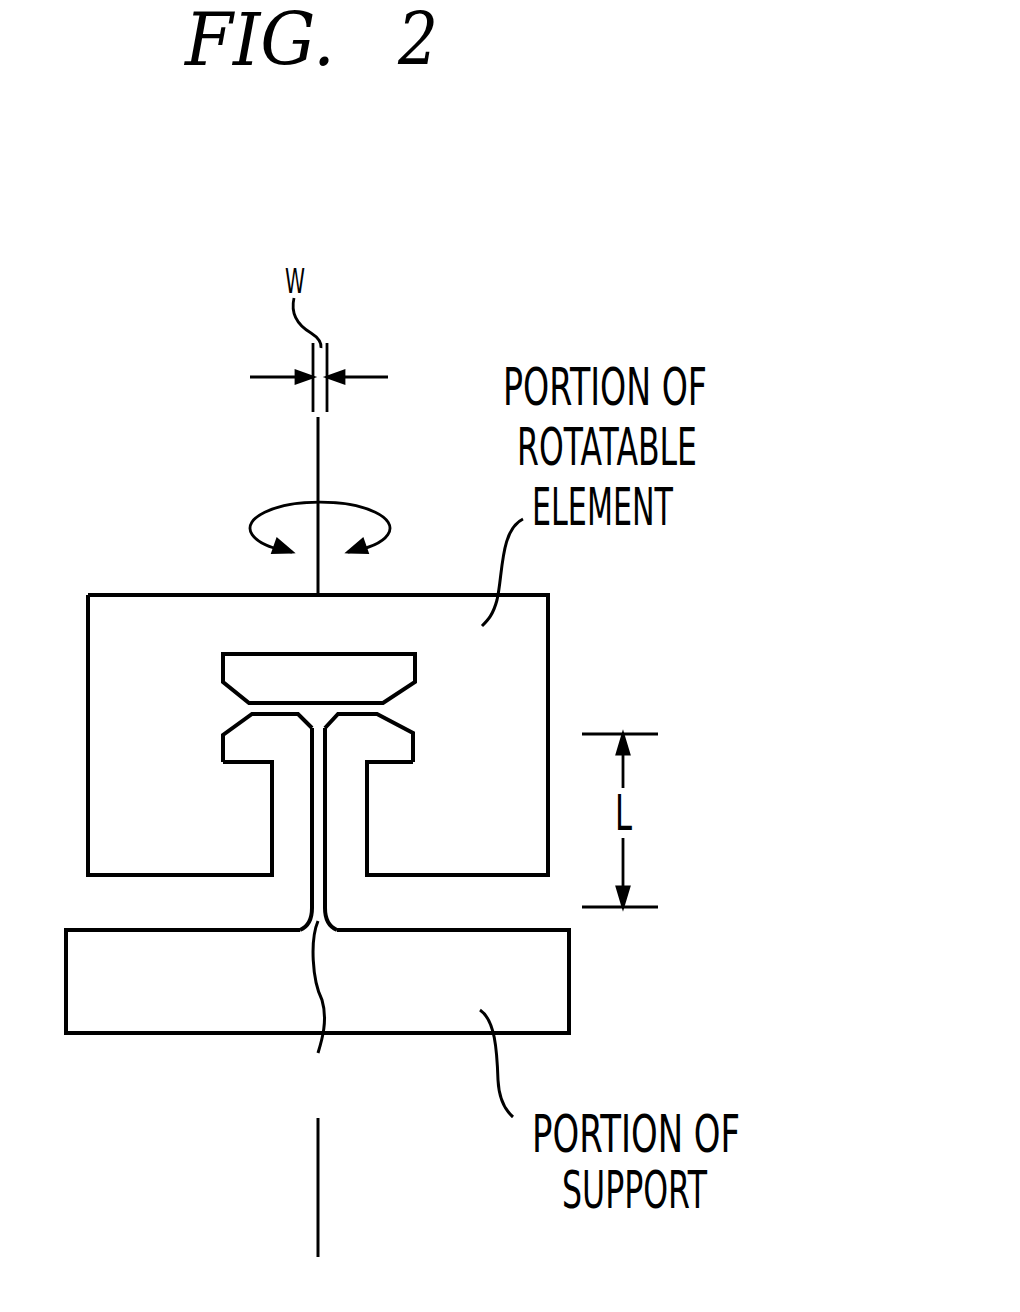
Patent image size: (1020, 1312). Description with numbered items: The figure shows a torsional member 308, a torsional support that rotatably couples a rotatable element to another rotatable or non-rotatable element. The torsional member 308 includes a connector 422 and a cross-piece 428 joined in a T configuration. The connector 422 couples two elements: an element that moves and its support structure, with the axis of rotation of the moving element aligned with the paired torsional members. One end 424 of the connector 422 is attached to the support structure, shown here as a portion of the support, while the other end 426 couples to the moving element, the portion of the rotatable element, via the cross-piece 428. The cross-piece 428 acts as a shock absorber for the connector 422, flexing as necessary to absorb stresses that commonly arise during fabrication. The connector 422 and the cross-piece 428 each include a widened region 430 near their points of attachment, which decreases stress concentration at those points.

The torsional member 308 is at (185, 545).
The connector 422 is at (328, 884).
The end 424 is at (284, 910).
The end 426 is at (292, 731).
The cross-piece 428 is at (257, 703).
The widened region 430 is at (238, 708).